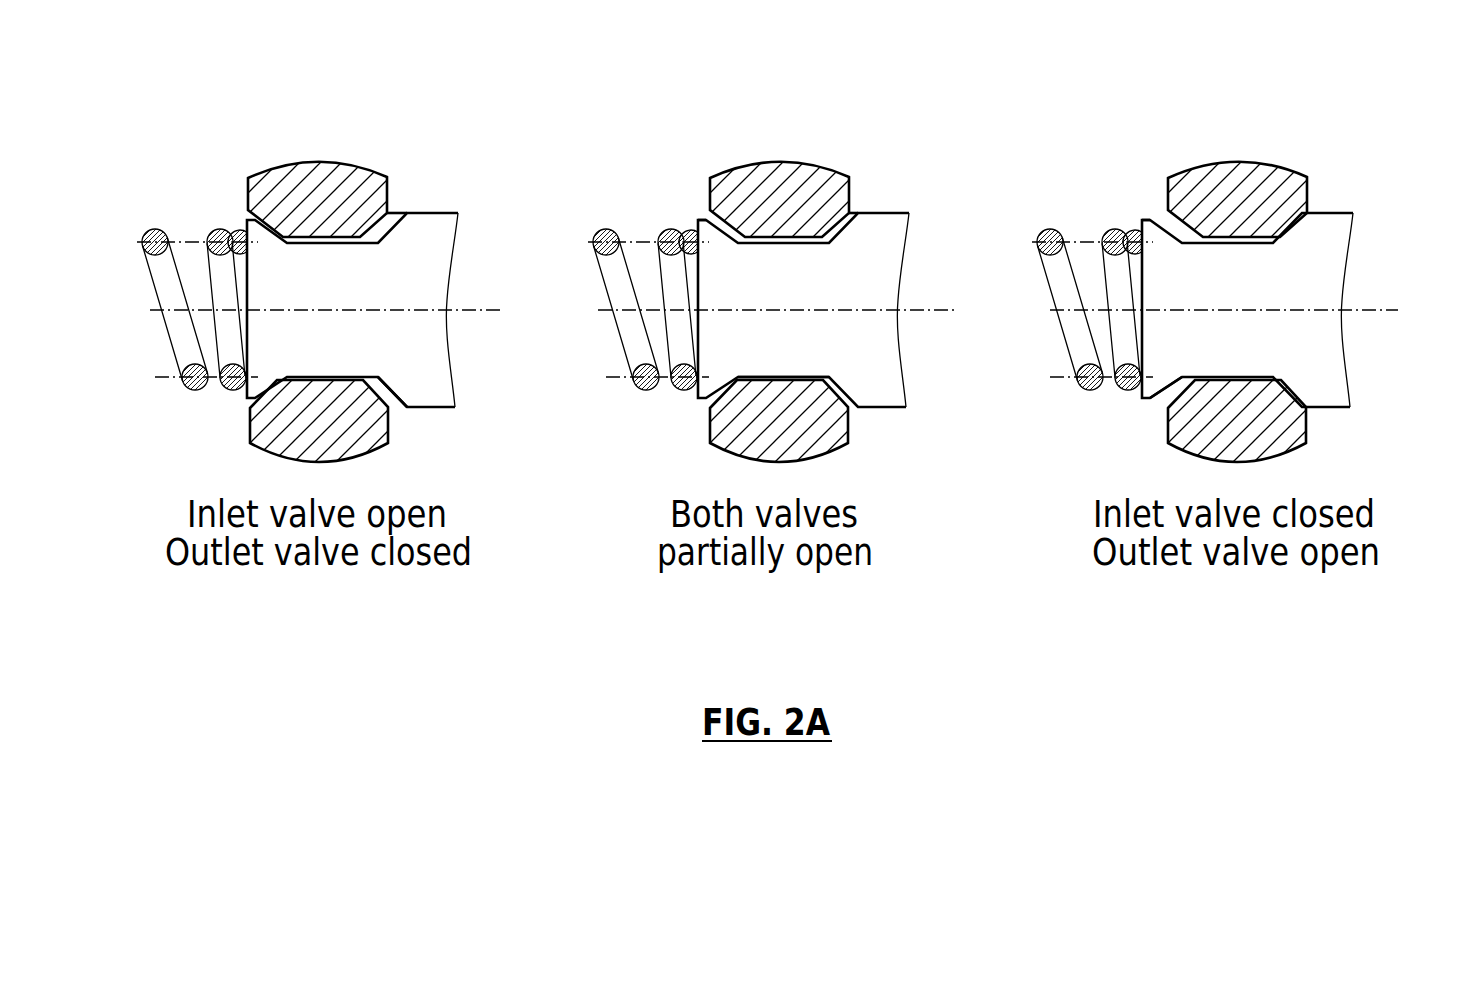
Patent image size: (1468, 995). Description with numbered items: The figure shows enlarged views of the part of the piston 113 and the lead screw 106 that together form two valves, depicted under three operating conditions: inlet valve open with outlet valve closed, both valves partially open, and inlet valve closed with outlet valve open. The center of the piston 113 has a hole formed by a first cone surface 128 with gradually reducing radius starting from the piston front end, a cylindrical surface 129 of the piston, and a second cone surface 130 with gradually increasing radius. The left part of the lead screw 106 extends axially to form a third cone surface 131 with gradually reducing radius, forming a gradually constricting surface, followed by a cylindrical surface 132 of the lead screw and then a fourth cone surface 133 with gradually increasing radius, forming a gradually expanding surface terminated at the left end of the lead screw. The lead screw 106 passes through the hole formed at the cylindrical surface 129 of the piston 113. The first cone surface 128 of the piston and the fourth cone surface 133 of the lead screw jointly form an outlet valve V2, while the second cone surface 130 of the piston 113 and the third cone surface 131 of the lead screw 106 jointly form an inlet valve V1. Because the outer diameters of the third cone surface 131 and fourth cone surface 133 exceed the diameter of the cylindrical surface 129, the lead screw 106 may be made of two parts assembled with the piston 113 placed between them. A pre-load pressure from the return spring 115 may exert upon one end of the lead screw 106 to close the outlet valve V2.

The lead screw 106 is at (414, 352).
The piston 113 is at (299, 182).
The return spring 115 is at (185, 350).
The first cone surface 128 is at (1170, 407).
The cylindrical surface of piston 129 is at (786, 378).
The second cone surface 130 is at (376, 391).
The third cone surface 131 is at (398, 401).
The cylindrical surface of lead screw 132 is at (807, 379).
The fourth cone surface 133 is at (1171, 383).
The inlet valve V1 is at (393, 214).
The outlet valve V2 is at (703, 214).